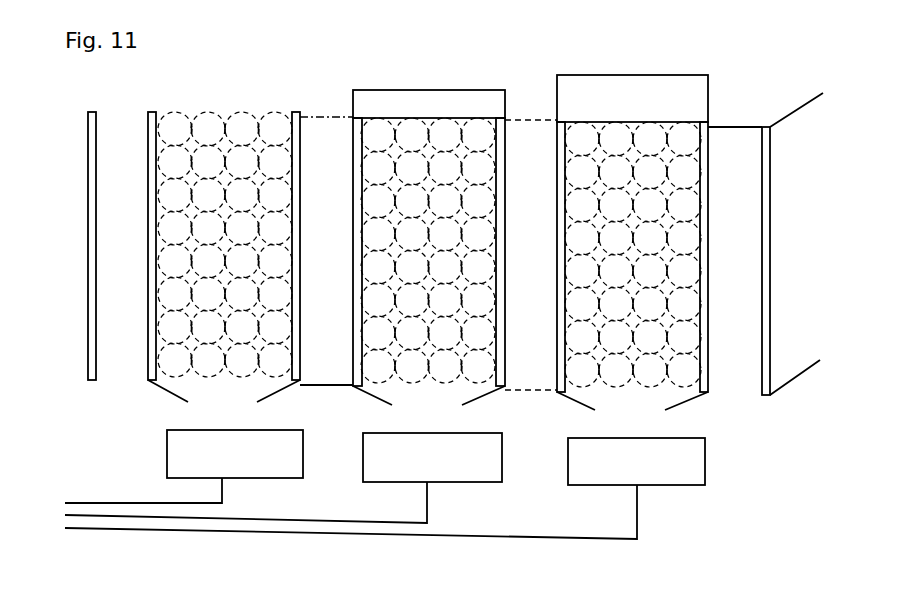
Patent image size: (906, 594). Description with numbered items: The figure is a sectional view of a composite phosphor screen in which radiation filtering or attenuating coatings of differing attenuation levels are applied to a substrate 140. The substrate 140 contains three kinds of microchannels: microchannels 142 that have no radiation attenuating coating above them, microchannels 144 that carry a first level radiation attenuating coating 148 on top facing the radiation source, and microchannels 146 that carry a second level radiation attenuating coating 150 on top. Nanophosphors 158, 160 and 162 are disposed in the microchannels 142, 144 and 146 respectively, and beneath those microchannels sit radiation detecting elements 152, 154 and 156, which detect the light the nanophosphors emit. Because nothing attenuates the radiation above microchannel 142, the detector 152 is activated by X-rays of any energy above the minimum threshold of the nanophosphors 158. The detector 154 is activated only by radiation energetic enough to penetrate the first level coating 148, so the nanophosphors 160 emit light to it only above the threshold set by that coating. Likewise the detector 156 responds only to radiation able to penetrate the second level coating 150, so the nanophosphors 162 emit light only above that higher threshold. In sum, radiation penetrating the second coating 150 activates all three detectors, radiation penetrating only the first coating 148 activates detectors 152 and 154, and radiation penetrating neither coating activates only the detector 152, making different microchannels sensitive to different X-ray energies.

The substrate 140 is at (769, 244).
The microchannels 142 is at (224, 268).
The microchannels 144 is at (429, 271).
The microchannels 146 is at (632, 273).
The first level radiation attenuating coating 148 is at (433, 90).
The second level radiation attenuating coating 150 is at (628, 75).
The radiation detecting element 152 is at (165, 448).
The radiation detecting element 154 is at (460, 482).
The radiation detecting element 156 is at (710, 467).
The nanophosphors 158 is at (210, 167).
The nanophosphors 160 is at (408, 167).
The nanophosphors 162 is at (620, 170).